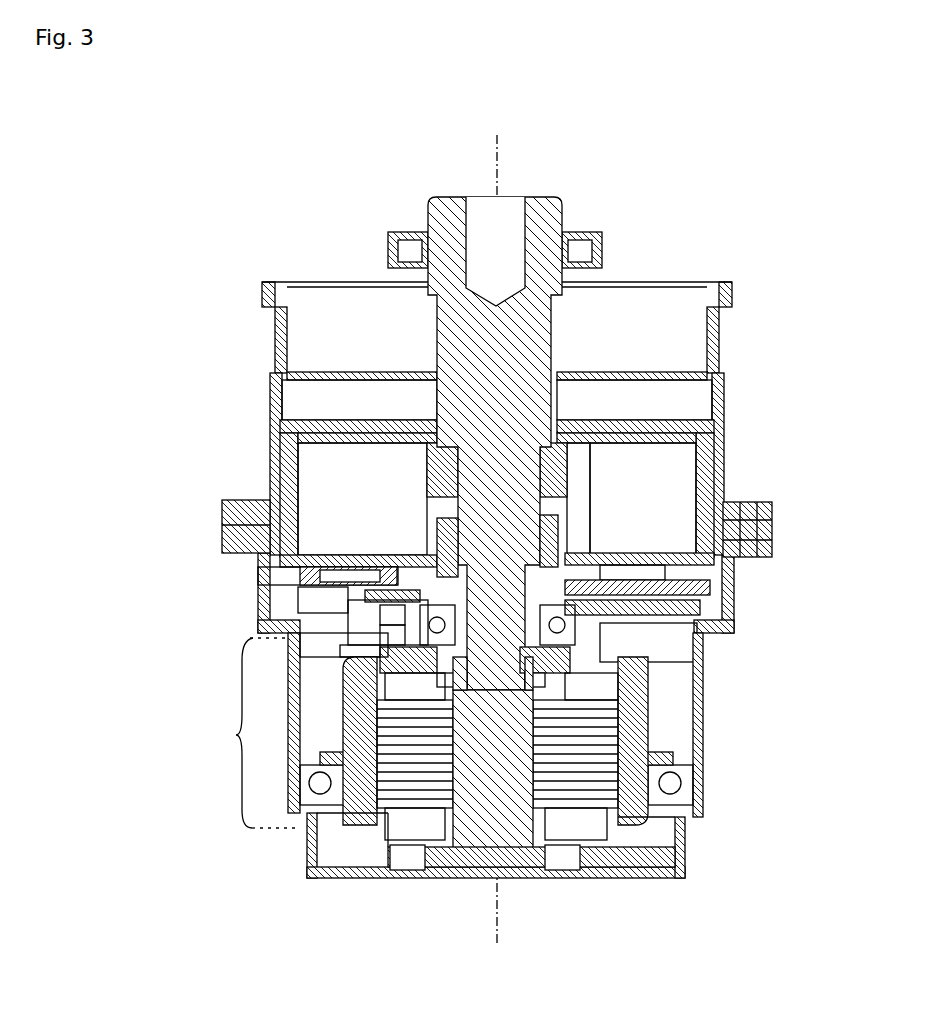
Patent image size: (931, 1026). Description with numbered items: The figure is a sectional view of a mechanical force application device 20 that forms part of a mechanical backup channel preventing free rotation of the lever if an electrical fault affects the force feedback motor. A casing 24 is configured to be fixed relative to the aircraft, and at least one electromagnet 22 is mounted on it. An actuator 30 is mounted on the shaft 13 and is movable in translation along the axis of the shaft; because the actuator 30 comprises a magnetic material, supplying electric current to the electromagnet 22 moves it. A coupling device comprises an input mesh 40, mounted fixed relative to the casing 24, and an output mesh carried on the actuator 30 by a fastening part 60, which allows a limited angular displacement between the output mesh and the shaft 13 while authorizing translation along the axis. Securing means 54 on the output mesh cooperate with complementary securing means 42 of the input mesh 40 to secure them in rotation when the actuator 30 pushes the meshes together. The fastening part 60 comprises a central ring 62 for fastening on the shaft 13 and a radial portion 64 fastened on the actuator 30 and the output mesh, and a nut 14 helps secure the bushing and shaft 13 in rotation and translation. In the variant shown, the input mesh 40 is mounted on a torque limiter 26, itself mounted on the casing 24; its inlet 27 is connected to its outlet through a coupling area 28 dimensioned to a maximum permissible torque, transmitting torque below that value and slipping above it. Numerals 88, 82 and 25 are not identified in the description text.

The mechanical force application device 20 is at (285, 203).
The shaft 13 is at (459, 324).
The electromagnet 22 is at (290, 462).
The actuator 30 is at (296, 585).
The central ring 62 is at (774, 531).
The sleeve 88 is at (558, 532).
The radial portion 64 is at (362, 600).
The fastening part 60 is at (360, 617).
The securing means 54 is at (360, 645).
The bearing carrier 82 is at (637, 611).
The input mesh 40 is at (557, 661).
The nut 14 is at (628, 680).
The securing means 42 is at (362, 652).
The electric motor 25 is at (238, 735).
The inlet 27 is at (657, 723).
The coupling area 28 is at (615, 800).
The torque limiter 26 is at (471, 832).
The casing 24 is at (356, 883).